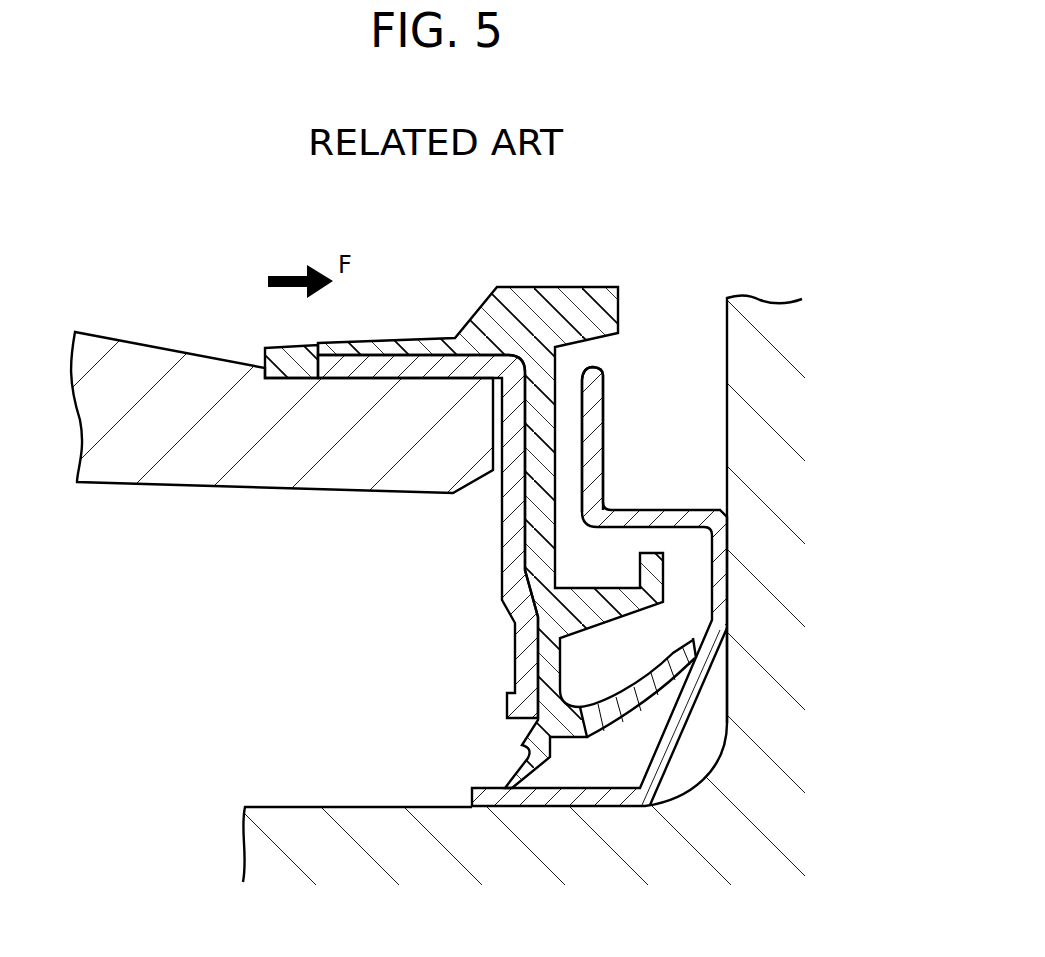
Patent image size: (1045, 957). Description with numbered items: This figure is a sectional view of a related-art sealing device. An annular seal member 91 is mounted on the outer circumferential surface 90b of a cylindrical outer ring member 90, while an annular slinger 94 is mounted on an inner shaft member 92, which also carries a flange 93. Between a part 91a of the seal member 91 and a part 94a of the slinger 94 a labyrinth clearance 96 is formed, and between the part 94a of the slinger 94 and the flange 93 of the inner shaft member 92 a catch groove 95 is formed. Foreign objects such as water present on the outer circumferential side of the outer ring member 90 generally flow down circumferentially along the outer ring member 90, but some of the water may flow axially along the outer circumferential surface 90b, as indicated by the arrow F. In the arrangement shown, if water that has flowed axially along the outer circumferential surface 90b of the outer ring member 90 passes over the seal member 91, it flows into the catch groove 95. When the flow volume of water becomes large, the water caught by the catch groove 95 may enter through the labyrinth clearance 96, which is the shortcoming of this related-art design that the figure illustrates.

The outer ring member 90 is at (94, 331).
The outer circumferential surface 90b is at (190, 350).
The seal member 91 is at (516, 284).
The part of the seal member 91a is at (540, 408).
The inner shaft member 92 is at (293, 806).
The flange 93 is at (765, 313).
The slinger 94 is at (665, 757).
The part of the slinger 94a is at (605, 448).
The catch groove 95 is at (659, 372).
The labyrinth clearance 96 is at (568, 372).